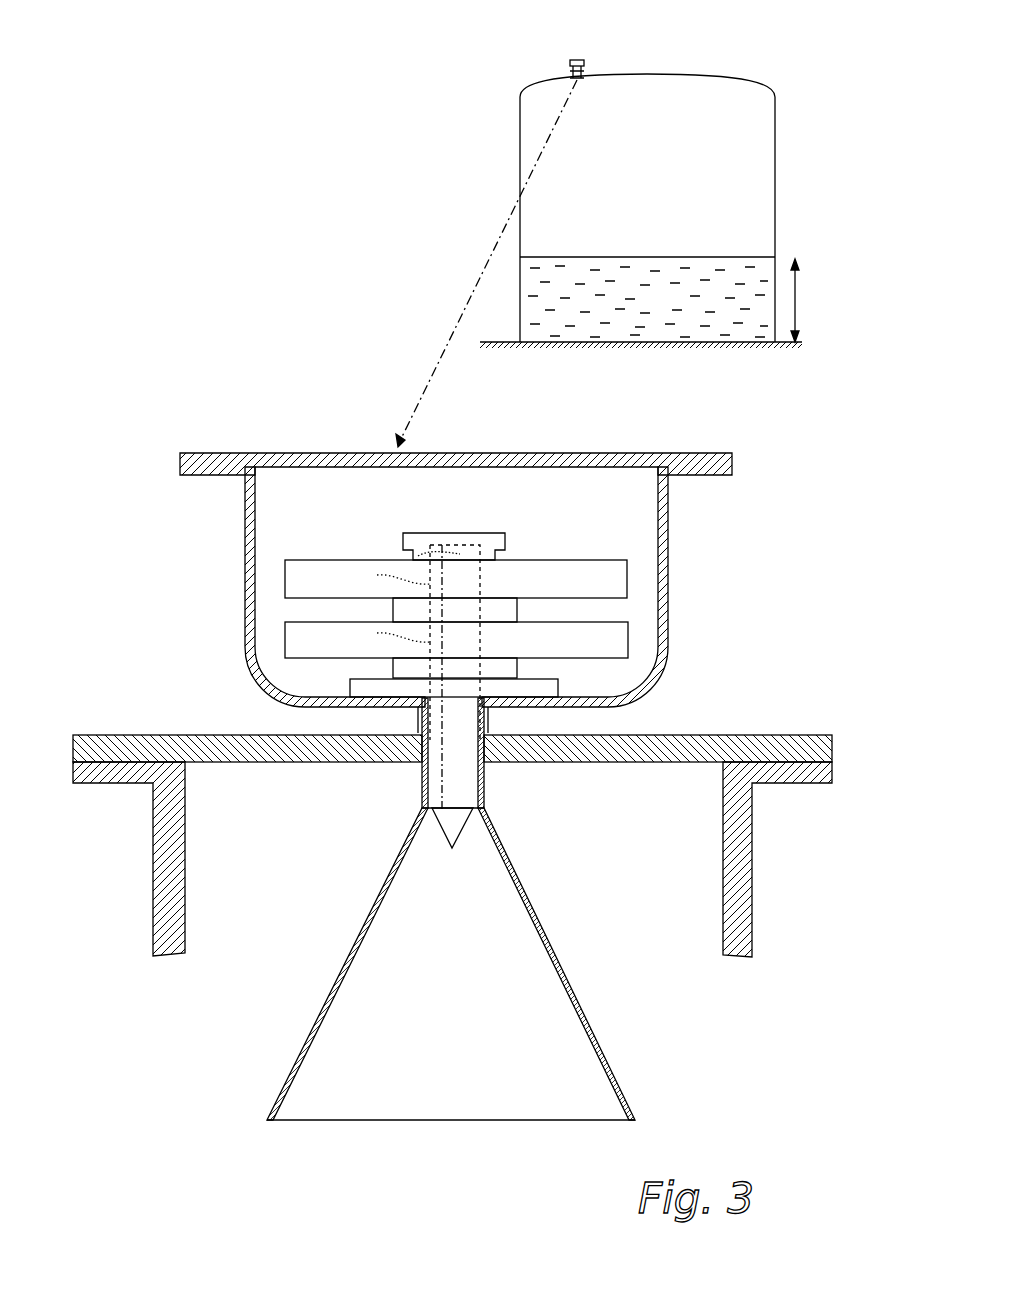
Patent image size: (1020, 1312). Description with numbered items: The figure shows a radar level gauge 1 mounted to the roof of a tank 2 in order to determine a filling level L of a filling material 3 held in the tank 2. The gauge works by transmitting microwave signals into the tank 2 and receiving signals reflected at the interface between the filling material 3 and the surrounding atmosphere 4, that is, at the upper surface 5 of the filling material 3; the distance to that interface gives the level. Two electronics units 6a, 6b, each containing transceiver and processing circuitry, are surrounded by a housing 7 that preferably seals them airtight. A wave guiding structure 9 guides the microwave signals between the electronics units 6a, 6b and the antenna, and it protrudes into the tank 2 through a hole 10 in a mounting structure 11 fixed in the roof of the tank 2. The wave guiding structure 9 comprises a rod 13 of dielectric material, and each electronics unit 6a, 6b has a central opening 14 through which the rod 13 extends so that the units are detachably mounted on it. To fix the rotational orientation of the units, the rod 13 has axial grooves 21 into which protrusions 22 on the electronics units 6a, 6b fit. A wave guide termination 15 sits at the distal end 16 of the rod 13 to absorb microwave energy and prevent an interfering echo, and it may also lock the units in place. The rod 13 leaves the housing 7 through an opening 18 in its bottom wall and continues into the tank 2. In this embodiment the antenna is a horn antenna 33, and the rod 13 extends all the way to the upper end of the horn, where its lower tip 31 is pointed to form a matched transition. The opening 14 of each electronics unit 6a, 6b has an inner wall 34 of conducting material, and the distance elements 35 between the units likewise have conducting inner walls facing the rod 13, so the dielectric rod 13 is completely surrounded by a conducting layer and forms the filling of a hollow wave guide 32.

The radar level gauge 1 is at (594, 51).
The tank 2 is at (153, 844).
The filling material 3 is at (648, 301).
The surrounding atmosphere 4 is at (279, 881).
The upper surface of the filling material 5 is at (603, 256).
The filling level L is at (807, 300).
The electronics unit 6a is at (308, 560).
The electronics unit 6b is at (283, 637).
The housing 7 is at (245, 628).
The wave guiding structure 9 is at (505, 670).
The hole 10 is at (455, 753).
The mounting structure 11 is at (344, 763).
The dielectric rod 13 is at (445, 741).
The opening 14 is at (460, 633).
The wave guide termination 15 is at (410, 552).
The distal end of the rod 16 is at (430, 556).
The opening in the bottom wall of the housing 18 is at (457, 722).
The grooves 21 is at (468, 557).
The protrusions 22 is at (387, 609).
The lower tip of the rod 31 is at (447, 831).
The hollow wave guide 32 is at (325, 666).
The horn antenna 33 is at (543, 935).
The inner wall 34 is at (352, 688).
The distance elements 35 is at (522, 603).